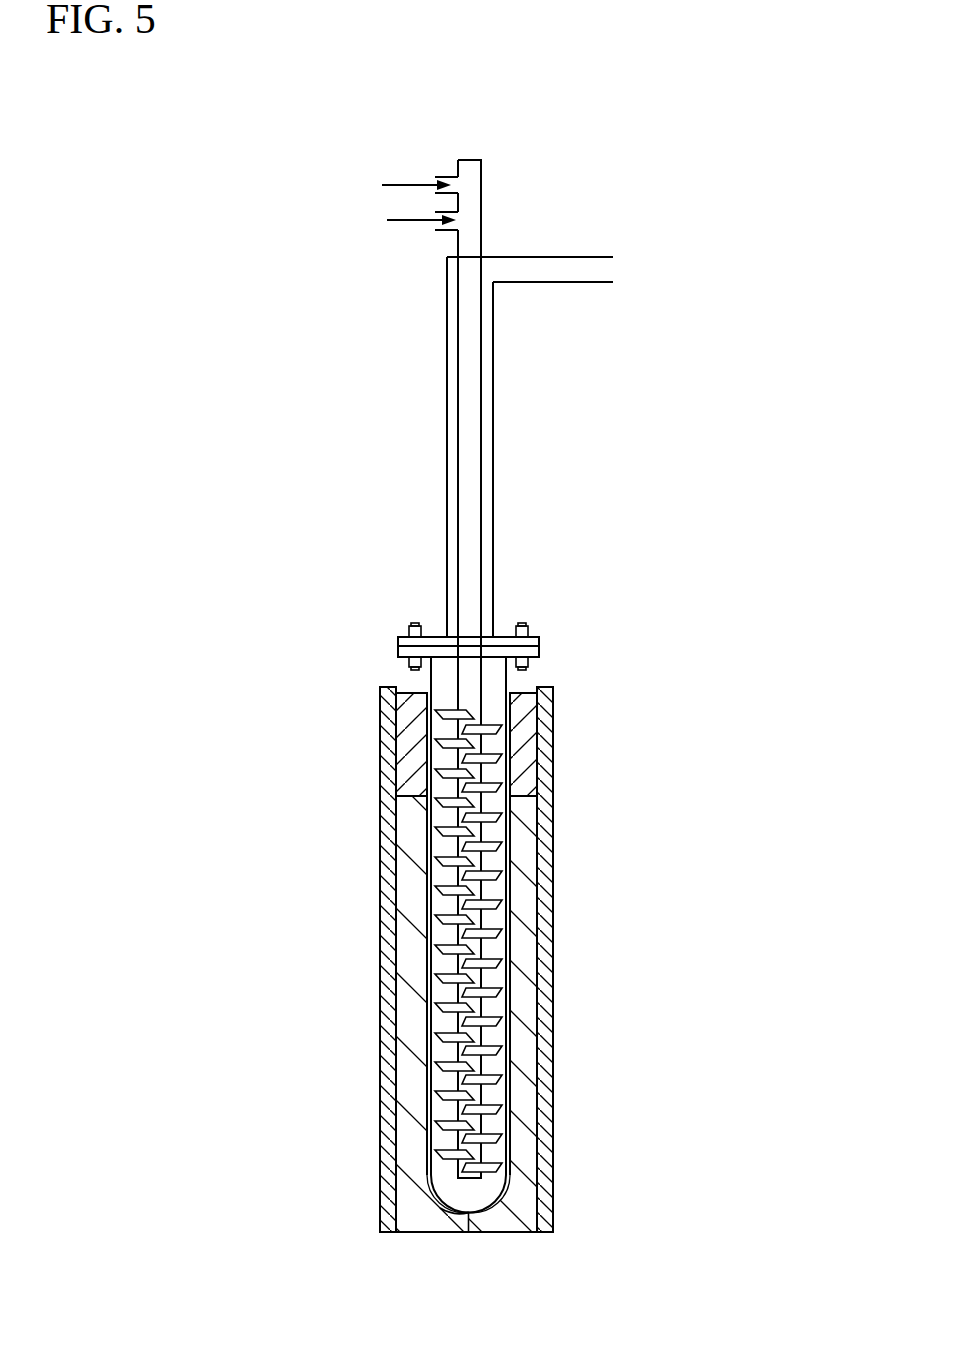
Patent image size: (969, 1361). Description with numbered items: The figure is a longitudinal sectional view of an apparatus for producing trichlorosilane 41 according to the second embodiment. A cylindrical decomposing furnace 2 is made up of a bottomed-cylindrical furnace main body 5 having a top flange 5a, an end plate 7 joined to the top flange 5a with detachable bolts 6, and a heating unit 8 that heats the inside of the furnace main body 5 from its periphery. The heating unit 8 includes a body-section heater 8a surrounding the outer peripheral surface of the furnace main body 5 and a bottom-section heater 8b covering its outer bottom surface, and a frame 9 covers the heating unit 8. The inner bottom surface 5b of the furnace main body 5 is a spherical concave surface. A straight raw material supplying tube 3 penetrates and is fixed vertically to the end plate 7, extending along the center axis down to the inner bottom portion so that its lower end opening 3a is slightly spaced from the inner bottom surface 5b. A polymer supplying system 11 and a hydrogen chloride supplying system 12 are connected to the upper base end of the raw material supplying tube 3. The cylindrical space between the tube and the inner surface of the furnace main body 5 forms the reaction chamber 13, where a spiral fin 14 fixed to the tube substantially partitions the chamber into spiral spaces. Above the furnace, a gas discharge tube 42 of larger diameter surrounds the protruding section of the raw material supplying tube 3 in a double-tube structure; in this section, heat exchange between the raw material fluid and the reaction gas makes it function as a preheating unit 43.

The decomposing furnace 2 is at (566, 739).
The raw material supplying tube 3 is at (482, 690).
The lower end opening 3a is at (468, 1180).
The furnace main body 5 is at (508, 855).
The top flange 5a is at (397, 650).
The inner bottom surface 5b is at (445, 1208).
The bolts 6 is at (412, 625).
The end plate 7 is at (540, 640).
The heating unit 8 is at (383, 1129).
The body-section heater 8a is at (415, 848).
The bottom-section heater 8b is at (493, 1213).
The frame 9 is at (543, 1013).
The polymer supplying system 11 is at (402, 222).
The hydrogen chloride supplying system 12 is at (398, 183).
The reaction chamber 13 is at (502, 942).
The fin 14 is at (427, 980).
The apparatus for producing trichlorosilane 41 is at (632, 611).
The gas discharge tube 42 is at (552, 257).
The preheating unit 43 is at (423, 287).